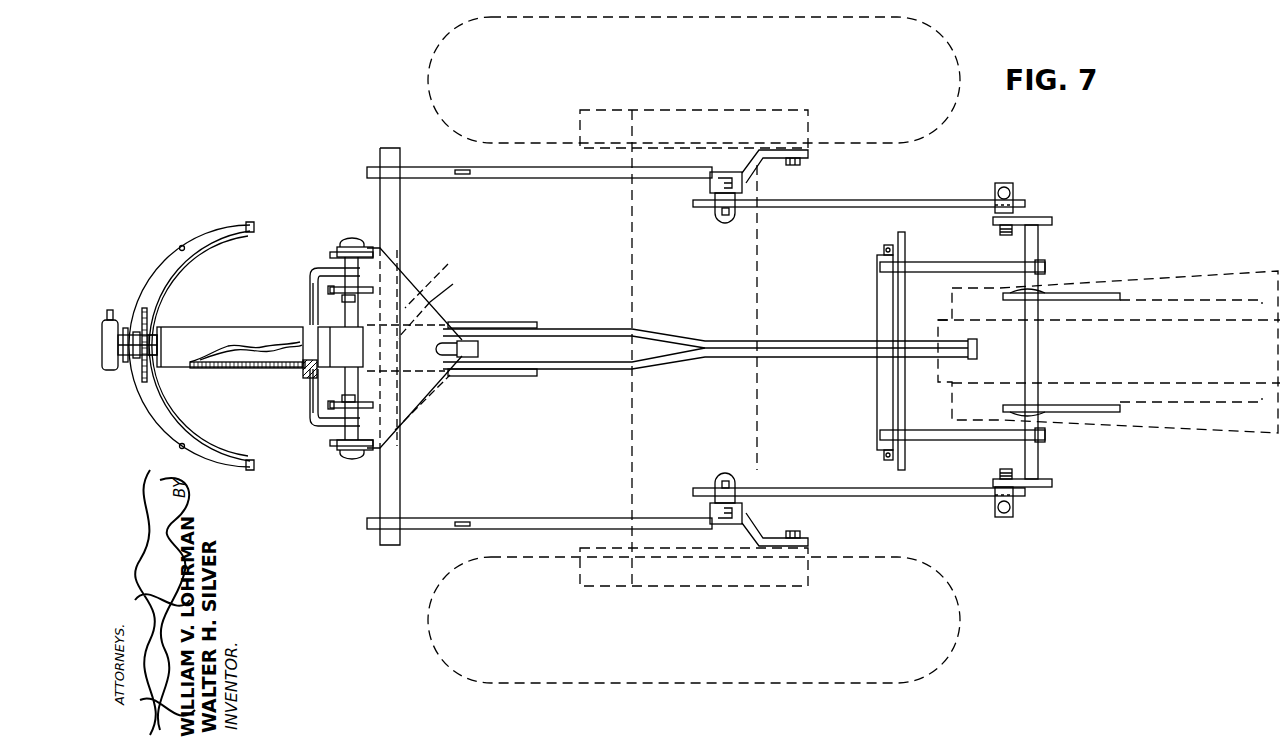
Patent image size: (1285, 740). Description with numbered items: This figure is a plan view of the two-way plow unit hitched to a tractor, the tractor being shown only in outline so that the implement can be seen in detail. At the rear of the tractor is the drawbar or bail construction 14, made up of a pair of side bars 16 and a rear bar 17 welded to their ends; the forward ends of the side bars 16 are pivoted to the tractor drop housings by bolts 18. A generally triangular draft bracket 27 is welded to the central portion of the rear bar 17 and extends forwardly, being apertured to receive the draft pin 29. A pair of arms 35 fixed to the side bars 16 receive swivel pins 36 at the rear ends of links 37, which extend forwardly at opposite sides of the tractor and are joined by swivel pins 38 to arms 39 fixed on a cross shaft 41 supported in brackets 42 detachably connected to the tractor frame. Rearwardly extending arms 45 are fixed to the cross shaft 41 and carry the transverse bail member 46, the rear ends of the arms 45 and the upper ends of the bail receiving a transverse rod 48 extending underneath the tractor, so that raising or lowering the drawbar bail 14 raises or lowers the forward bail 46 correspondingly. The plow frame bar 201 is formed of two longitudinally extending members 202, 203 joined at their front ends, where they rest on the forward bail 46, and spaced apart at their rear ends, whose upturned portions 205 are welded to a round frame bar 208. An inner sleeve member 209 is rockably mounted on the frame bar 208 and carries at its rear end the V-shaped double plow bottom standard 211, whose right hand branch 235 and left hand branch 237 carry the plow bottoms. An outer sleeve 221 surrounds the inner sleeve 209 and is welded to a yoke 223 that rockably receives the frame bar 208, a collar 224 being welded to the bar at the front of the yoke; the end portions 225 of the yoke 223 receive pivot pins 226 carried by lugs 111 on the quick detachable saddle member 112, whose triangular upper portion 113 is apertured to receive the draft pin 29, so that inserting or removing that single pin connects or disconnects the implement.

The tractor drawbar or bail construction 14 is at (450, 535).
The side bars 16 is at (498, 176).
The rear bar 17 is at (392, 212).
The bolts 18 is at (800, 165).
The draft bracket 27 is at (439, 277).
The draft pin 29 is at (467, 345).
The arms 35 is at (710, 182).
The swivel pins 36 is at (718, 212).
The links 37 is at (900, 205).
The swivel pins 38 is at (996, 192).
The arms 39 is at (1025, 218).
The cross shaft 41 is at (1032, 345).
The brackets 42 is at (1078, 294).
The arms 45 is at (938, 262).
The transverse bail member 46 is at (880, 398).
The transverse rod 48 is at (880, 302).
The lugs 111 is at (333, 289).
The saddle or hitch member 112 is at (410, 268).
The upper portion 113 is at (440, 304).
The frame bar 201 is at (726, 341).
The longitudinally extending member 202 is at (607, 329).
The longitudinally extending member 203 is at (604, 376).
The rear upturned portions 205 is at (325, 273).
The frame bar 208 is at (330, 333).
The inner sleeve member 209 is at (248, 346).
The double plow bottom standard 211 is at (138, 418).
The outer sleeve 221 is at (199, 330).
The yoke 223 is at (312, 400).
The collar 224 is at (305, 381).
The end portions 225 is at (380, 246).
The pivot pins 226 is at (355, 240).
The right hand branch 235 is at (172, 428).
The left hand branch 237 is at (197, 238).